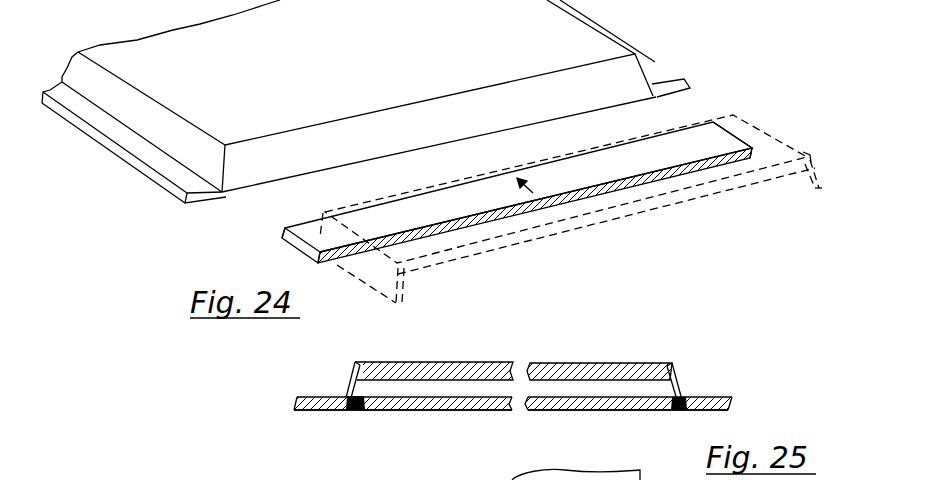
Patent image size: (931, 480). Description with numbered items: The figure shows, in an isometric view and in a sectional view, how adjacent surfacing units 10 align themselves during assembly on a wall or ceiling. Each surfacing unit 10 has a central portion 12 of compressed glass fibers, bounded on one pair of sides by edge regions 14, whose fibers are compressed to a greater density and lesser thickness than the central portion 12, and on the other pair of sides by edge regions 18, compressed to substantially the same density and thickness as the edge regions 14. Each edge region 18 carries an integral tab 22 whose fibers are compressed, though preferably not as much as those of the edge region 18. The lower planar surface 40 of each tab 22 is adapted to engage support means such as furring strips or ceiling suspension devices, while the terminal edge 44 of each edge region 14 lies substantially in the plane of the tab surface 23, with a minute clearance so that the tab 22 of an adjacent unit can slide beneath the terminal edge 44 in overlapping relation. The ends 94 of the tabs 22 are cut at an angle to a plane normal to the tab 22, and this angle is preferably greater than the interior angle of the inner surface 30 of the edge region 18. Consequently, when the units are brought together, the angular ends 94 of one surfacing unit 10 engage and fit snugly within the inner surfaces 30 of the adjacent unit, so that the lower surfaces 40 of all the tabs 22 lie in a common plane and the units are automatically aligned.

In FIG. 24, the surfacing unit 10 is at (364, 285).
In FIG. 25, the surfacing unit 10 is at (573, 362).
In FIG. 25, the central portion 12 is at (450, 362).
In FIG. 24, the edge region 14 is at (410, 129).
In FIG. 24, the edge region 18 is at (128, 107).
In FIG. 25, the edge region 18 is at (349, 387).
In FIG. 24, the tab 22 is at (141, 149).
In FIG. 25, the tab 22 is at (297, 401).
In FIG. 24, the tab surface 23 is at (164, 165).
In FIG. 25, the tab surface 23 is at (688, 397).
In FIG. 24, the inner surface 30 is at (222, 193).
In FIG. 25, the inner surface 30 is at (355, 373).
In FIG. 24, the planar surface 40 is at (200, 207).
In FIG. 25, the planar surface 40 is at (312, 410).
In FIG. 24, the terminal edge 44 is at (500, 128).
In FIG. 24, the angular end 94 is at (284, 230).
In FIG. 25, the angular end 94 is at (363, 402).